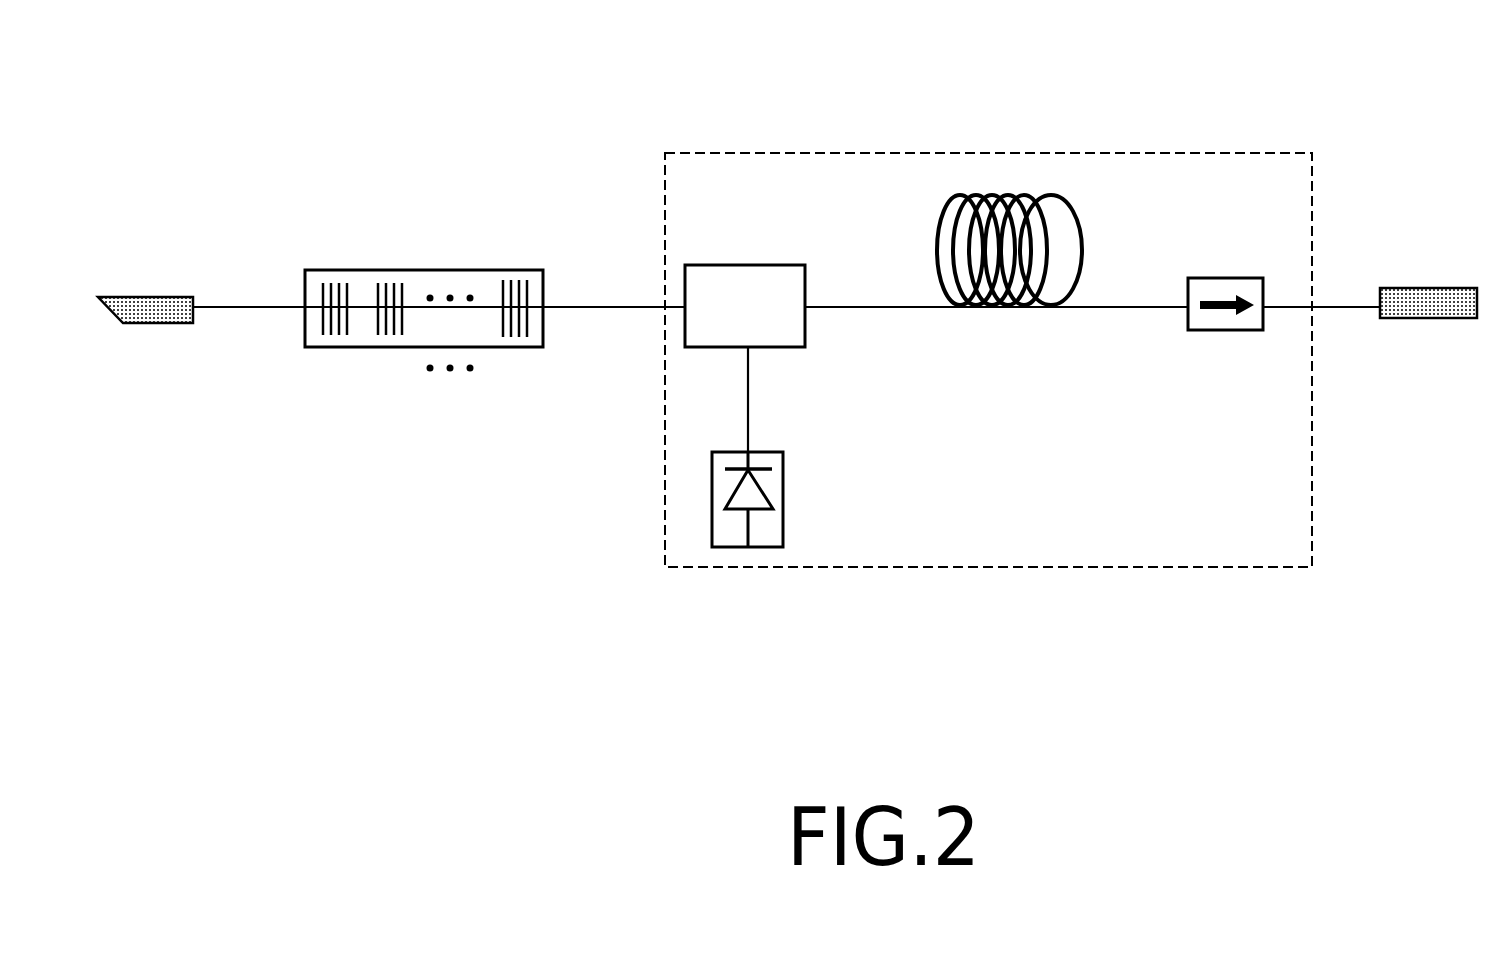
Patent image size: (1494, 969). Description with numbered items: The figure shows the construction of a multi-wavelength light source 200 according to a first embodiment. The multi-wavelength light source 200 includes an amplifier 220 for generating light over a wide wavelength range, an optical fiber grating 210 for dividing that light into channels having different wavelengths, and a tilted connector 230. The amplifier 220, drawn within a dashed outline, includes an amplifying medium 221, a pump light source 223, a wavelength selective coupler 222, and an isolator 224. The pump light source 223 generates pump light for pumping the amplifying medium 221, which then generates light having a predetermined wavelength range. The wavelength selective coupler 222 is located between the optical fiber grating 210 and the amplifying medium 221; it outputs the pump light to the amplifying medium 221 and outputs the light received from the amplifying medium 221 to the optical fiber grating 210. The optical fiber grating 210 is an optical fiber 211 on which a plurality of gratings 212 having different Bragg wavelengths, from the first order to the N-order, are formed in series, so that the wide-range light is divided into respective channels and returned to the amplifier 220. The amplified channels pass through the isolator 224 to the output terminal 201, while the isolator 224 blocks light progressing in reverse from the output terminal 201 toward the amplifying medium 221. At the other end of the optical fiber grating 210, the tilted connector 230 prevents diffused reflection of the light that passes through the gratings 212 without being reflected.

The multi-wavelength light source 200 is at (479, 562).
The output terminal 201 is at (1425, 319).
The optical fiber grating 210 is at (490, 236).
The optical fiber 211 is at (305, 325).
The gratings 212 is at (390, 282).
The amplifier 220 is at (962, 128).
The amplifying medium 221 is at (997, 308).
The wavelength selective coupler 222 is at (805, 283).
The pump light source 223 is at (783, 495).
The isolator 224 is at (1228, 331).
The tilted connector 230 is at (140, 296).